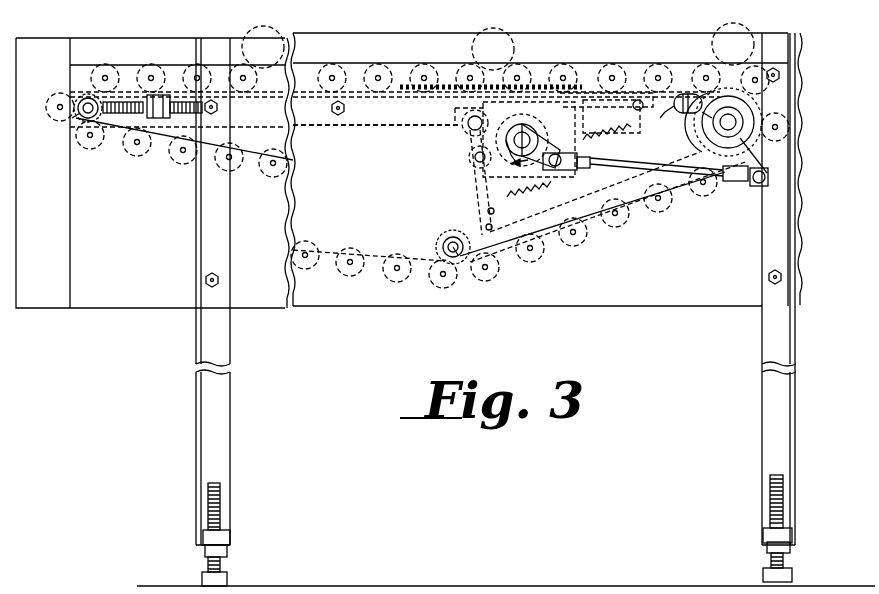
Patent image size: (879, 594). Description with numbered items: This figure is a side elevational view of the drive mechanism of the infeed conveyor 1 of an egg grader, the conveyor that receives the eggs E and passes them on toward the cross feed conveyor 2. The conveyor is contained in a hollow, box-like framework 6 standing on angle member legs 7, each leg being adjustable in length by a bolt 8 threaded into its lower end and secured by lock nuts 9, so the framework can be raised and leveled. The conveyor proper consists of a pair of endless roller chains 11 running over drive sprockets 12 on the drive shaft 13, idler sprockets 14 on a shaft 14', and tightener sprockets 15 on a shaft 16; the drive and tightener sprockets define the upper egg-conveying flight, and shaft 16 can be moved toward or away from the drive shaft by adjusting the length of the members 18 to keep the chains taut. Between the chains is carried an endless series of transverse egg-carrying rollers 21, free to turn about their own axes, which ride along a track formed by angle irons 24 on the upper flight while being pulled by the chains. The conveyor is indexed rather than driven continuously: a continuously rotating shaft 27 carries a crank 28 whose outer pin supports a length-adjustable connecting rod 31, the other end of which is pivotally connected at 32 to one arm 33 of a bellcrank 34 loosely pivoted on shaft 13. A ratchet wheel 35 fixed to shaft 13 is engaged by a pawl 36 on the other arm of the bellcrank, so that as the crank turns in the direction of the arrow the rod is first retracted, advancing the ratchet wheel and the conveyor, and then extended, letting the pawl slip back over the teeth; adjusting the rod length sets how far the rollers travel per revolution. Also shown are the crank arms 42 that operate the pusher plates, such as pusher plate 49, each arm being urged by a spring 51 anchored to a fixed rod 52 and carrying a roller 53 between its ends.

The infeed conveyor 1 is at (413, 28).
The cross feed conveyor 2 is at (792, 28).
The framework 6 is at (120, 314).
The angle member legs 7 is at (196, 415).
The bolt 8 is at (207, 570).
The lock nuts 9 is at (228, 550).
The endless roller chains 11 is at (396, 68).
The drive sprockets 12 is at (700, 158).
The shaft 13 is at (640, 197).
The idler sprockets 14 is at (445, 233).
The shaft 14' is at (474, 273).
The tightener sprockets 15 is at (80, 92).
The shaft 16 is at (72, 118).
The members 18 is at (127, 113).
The egg-carrying rollers 21 is at (147, 68).
The angle irons 24 is at (360, 128).
The shaft 27 is at (522, 140).
The crank 28 is at (557, 154).
The connecting rod 31 is at (648, 175).
The pivotal connection 32 is at (752, 183).
The arm 33 is at (748, 157).
The bellcrank 34 is at (693, 111).
The ratchet wheel 35 is at (732, 98).
The pawl 36 is at (697, 92).
The crank arms 42 is at (477, 188).
The pusher plate 49 is at (503, 144).
The spring 51 is at (610, 110).
The fixed rod 52 is at (633, 104).
The roller 53 is at (470, 155).
The eggs E is at (274, 26).